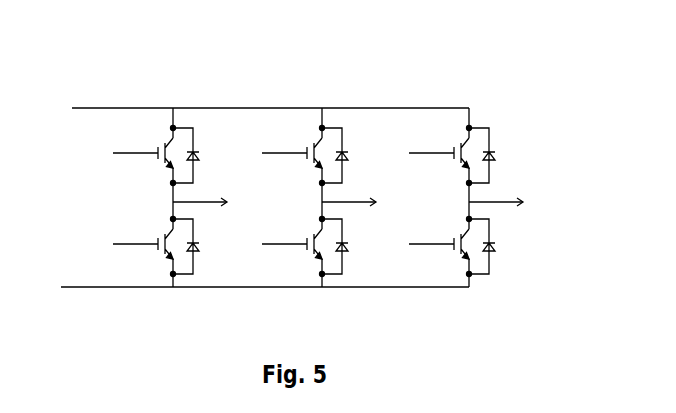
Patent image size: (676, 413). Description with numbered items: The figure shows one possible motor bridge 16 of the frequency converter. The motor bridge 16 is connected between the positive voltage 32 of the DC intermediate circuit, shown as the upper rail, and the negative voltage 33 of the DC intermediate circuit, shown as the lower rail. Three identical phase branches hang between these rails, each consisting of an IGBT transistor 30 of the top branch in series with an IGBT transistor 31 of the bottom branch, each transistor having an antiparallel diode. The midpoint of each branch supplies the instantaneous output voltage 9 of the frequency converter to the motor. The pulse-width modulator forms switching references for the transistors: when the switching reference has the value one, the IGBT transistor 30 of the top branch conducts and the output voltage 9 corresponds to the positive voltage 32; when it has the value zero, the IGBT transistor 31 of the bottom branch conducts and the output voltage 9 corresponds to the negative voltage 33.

The motor bridge 16 is at (397, 92).
The positive voltage of the DC intermediate circuit 32 is at (120, 107).
The negative voltage of the DC intermediate circuit 33 is at (88, 287).
The IGBT transistor of the top branch 30 is at (177, 153).
The IGBT transistor of the bottom branch 31 is at (176, 240).
The output voltage 9 is at (202, 198).